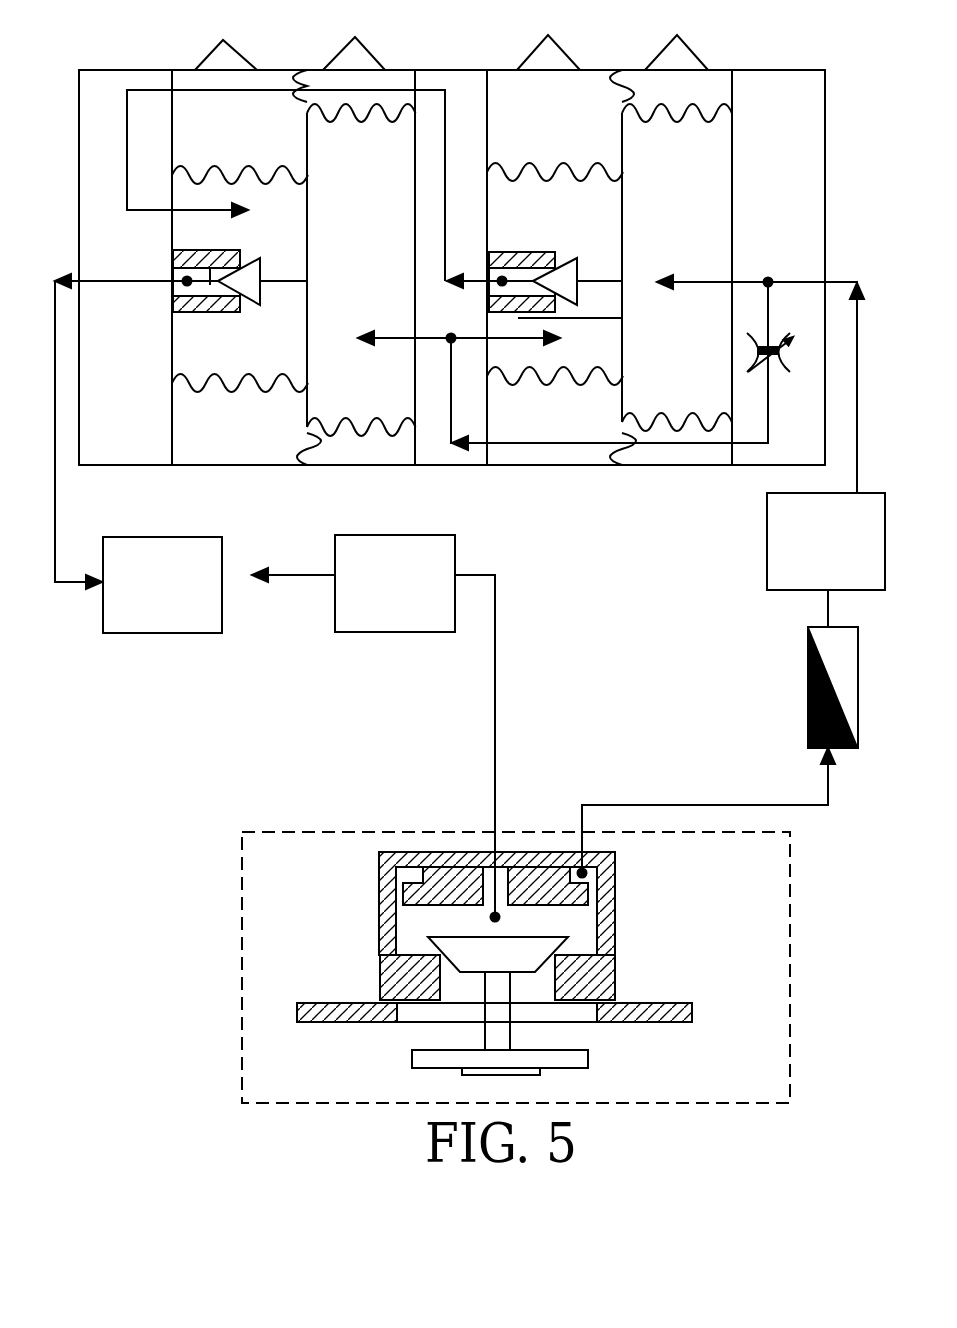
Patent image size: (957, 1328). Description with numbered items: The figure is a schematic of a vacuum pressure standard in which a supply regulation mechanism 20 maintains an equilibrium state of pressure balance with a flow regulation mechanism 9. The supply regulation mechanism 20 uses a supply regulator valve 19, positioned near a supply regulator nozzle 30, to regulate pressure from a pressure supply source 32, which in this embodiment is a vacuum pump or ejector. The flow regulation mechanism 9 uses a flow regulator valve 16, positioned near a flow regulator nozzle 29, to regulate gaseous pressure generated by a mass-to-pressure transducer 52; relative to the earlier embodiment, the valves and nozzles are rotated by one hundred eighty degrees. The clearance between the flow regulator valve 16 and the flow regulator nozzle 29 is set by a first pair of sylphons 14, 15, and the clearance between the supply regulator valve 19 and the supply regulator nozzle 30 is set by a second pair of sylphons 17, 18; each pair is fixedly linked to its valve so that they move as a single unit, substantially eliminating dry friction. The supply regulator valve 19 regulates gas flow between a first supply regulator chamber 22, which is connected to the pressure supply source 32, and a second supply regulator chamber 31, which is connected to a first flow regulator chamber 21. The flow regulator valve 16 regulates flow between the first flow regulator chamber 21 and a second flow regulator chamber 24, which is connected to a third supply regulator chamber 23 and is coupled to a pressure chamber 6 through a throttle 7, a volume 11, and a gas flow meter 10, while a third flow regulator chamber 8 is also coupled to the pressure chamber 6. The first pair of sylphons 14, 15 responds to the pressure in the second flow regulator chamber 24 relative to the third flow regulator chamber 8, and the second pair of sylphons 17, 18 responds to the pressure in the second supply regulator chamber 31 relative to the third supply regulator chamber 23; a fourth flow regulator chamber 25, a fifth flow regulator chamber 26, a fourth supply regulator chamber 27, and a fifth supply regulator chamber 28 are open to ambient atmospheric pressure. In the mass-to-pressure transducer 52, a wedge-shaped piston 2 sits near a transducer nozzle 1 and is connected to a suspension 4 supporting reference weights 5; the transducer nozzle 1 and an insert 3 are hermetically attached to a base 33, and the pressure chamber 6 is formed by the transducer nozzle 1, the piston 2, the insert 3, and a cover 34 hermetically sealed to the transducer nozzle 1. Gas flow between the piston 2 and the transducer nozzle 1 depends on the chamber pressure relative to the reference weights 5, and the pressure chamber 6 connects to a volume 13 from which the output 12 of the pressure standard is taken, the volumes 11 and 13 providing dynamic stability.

The transducer nozzle 1 is at (600, 980).
The piston 2 is at (513, 953).
The insert 3 is at (570, 893).
The suspension 4 is at (498, 1038).
The reference weights 5 is at (563, 1057).
The pressure chamber 6 is at (420, 922).
The throttle 7 is at (780, 330).
The third flow regulator chamber 8 is at (713, 272).
The flow regulation mechanism 9 is at (828, 380).
The gas flow meter 10 is at (840, 658).
The volume 11 is at (805, 573).
The output signal line 12 is at (300, 577).
The volume 13 is at (357, 617).
The sylphon 14 is at (713, 107).
The sylphon 15 is at (537, 163).
The flow regulator valve 16 is at (572, 280).
The sylphon 17 is at (337, 107).
The sylphon 18 is at (280, 175).
The supply regulator valve 19 is at (243, 280).
The supply regulation mechanism 20 is at (263, 467).
The first flow regulator chamber 21 is at (525, 280).
The first supply regulator chamber 22 is at (212, 267).
The third supply regulator chamber 23 is at (363, 157).
The second flow regulator chamber 24 is at (598, 197).
The fourth flow regulator chamber 25 is at (710, 87).
The fifth flow regulator chamber 26 is at (523, 100).
The fourth supply regulator chamber 27 is at (367, 100).
The fifth supply regulator chamber 28 is at (190, 122).
The flow regulator nozzle 29 is at (567, 280).
The supply regulator nozzle 30 is at (203, 305).
The second supply regulator chamber 31 is at (197, 197).
The pressure supply source 32 is at (177, 592).
The base 33 is at (670, 1010).
The cover 34 is at (387, 895).
The mass-to-pressure transducer 52 is at (383, 830).